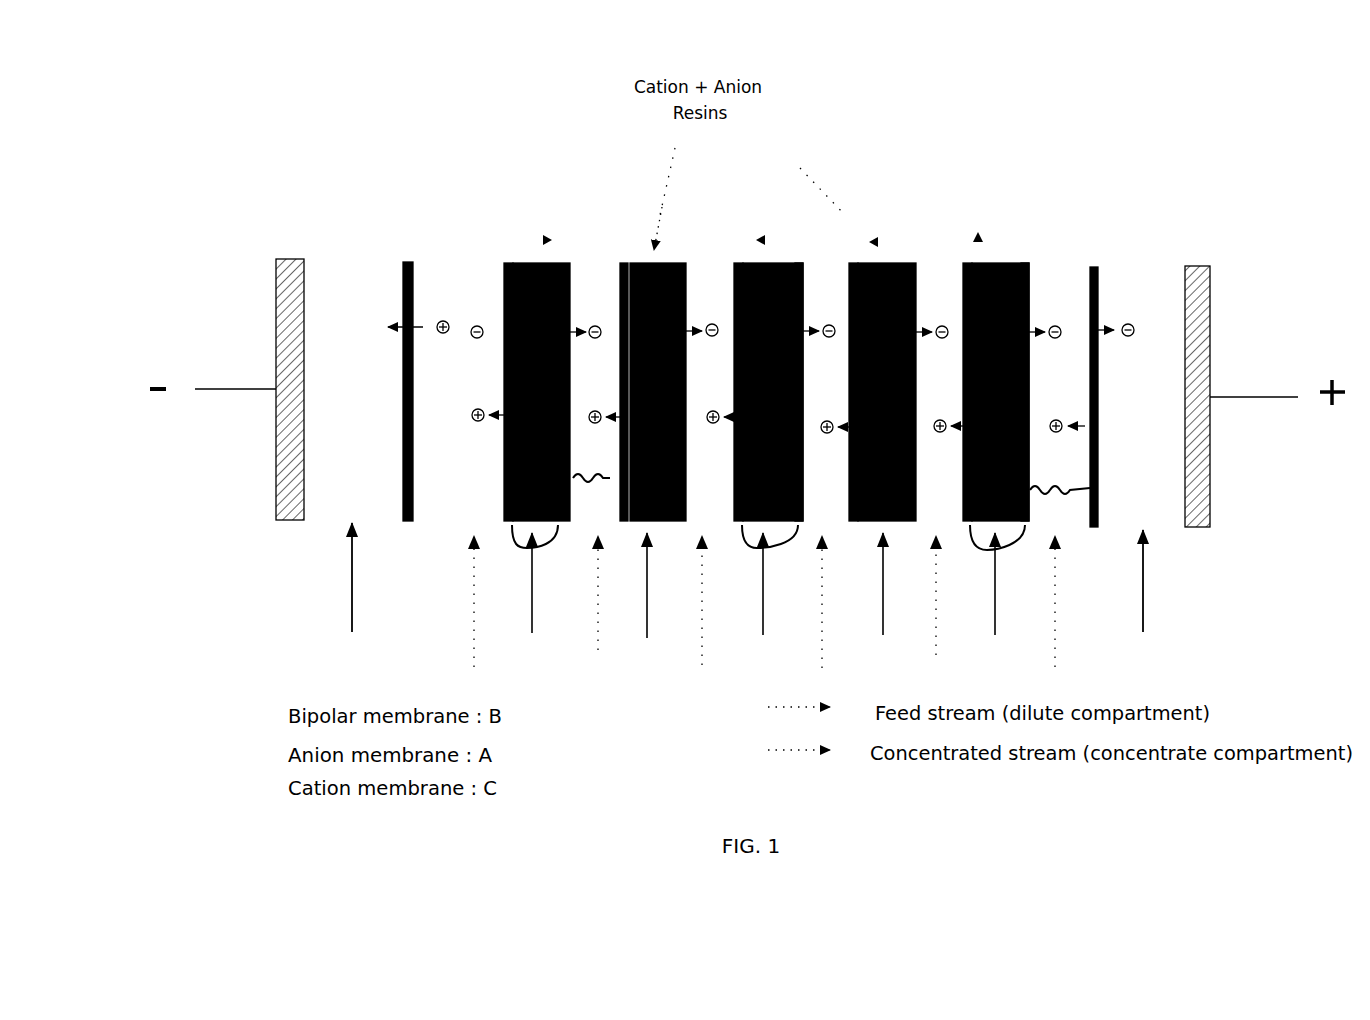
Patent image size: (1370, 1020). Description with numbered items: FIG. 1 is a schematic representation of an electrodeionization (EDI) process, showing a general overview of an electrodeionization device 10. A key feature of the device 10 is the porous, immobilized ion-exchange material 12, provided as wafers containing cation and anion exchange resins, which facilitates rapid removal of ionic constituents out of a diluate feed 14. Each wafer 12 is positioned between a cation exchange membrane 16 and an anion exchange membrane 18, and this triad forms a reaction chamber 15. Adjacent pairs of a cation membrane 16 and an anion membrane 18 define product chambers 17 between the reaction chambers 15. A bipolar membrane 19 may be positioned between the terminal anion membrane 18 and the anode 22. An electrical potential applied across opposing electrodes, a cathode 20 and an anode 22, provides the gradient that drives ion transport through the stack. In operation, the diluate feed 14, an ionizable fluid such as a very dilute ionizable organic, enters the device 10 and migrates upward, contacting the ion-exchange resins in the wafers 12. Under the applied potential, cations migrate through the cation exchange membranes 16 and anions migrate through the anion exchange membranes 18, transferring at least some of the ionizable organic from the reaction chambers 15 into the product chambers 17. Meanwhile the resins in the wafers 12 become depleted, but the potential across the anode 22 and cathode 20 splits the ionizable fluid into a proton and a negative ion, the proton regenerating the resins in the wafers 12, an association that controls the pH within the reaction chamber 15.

The electrodeionization device 10 is at (1172, 140).
The porous immobilized ion-exchange material 12 is at (530, 263).
The diluate feed 14 is at (645, 620).
The reaction chamber 15 is at (527, 548).
The cation exchange membrane 16 is at (505, 368).
The product chamber 17 is at (831, 469).
The anion exchange membrane 18 is at (803, 308).
The bipolar membrane 19 is at (1098, 273).
The cathode 20 is at (277, 418).
The anode 22 is at (1200, 305).